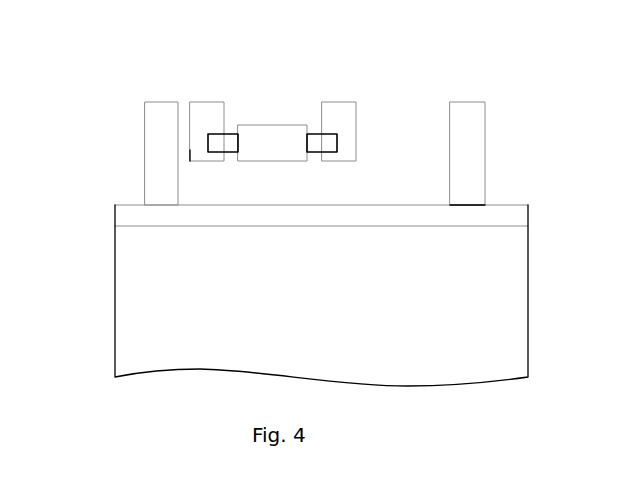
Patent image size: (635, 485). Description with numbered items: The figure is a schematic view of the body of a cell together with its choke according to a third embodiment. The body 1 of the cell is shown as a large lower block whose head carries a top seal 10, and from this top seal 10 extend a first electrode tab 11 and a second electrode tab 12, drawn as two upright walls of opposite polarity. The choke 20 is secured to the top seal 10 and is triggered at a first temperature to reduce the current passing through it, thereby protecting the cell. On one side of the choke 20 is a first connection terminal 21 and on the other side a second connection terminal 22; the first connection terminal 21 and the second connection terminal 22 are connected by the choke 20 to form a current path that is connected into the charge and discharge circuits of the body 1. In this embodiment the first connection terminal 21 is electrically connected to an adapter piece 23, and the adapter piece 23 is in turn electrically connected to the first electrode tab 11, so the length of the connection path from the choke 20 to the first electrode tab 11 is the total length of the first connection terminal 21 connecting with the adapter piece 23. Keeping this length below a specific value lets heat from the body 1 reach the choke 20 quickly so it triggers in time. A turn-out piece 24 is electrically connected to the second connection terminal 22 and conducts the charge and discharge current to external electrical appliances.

The body 1 is at (282, 203).
The top seal 10 is at (123, 217).
The first electrode tab 11 is at (157, 136).
The second electrode tab 12 is at (467, 129).
The choke 20 is at (275, 138).
The first connection terminal 21 is at (230, 138).
The second connection terminal 22 is at (313, 138).
The adapter piece 23 is at (202, 110).
The turn-out piece 24 is at (340, 127).